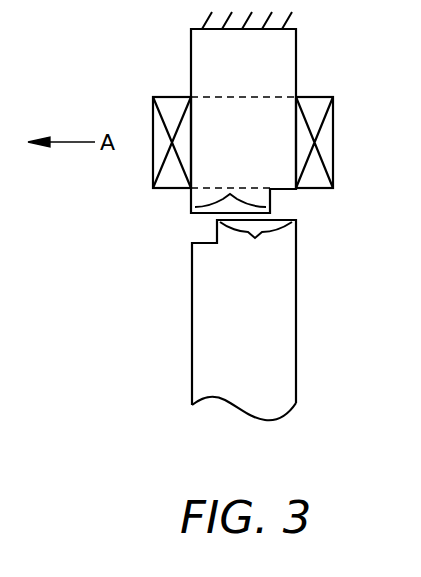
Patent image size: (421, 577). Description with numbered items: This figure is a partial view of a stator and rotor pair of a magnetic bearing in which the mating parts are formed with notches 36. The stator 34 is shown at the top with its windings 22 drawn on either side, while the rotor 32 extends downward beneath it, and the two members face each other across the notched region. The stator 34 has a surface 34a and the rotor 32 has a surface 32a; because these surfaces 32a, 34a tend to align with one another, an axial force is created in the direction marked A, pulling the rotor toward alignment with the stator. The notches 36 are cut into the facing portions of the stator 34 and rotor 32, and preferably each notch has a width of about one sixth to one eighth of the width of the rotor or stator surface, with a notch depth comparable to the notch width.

The windings 22 is at (157, 121).
The rotor 32 is at (257, 377).
The rotor surface 32a is at (256, 246).
The stator 34 is at (250, 76).
The stator surface 34a is at (231, 195).
The notches 36 is at (202, 233).